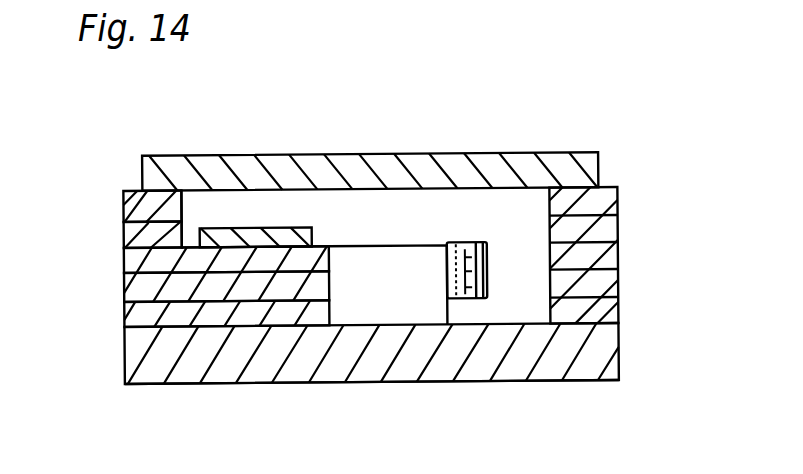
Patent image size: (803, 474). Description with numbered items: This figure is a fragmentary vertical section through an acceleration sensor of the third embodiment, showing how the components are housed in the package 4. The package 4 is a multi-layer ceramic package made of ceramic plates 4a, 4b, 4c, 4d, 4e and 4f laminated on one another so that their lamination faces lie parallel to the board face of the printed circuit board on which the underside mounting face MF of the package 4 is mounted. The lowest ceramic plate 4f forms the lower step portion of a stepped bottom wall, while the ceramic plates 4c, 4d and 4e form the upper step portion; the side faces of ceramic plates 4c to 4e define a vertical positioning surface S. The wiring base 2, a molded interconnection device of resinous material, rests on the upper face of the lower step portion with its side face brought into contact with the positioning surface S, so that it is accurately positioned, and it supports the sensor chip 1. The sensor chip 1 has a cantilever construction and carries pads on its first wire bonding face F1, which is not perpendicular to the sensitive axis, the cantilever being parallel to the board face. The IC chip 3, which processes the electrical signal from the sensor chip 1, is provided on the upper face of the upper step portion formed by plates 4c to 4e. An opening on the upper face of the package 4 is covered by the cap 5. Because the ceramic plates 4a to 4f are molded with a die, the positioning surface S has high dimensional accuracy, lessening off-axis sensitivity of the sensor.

The sensor chip 1 is at (466, 244).
The wiring base 2 is at (408, 258).
The IC chip 3 is at (240, 240).
The package 4 is at (618, 257).
The ceramic plate 4a is at (124, 202).
The ceramic plate 4b is at (124, 238).
The ceramic plate 4c is at (124, 260).
The ceramic plate 4d is at (124, 288).
The ceramic plate 4e is at (124, 321).
The ceramic plate 4f is at (125, 355).
The cap 5 is at (565, 170).
The positioning surface S is at (333, 262).
The first wire bonding face F1 is at (467, 300).
The mounting face MF is at (543, 383).